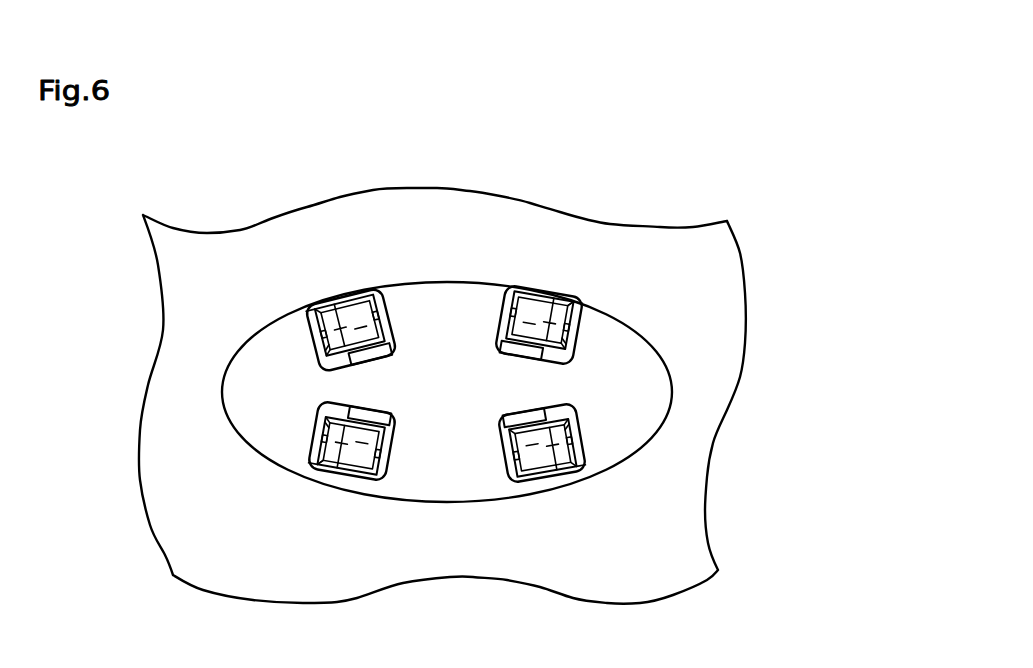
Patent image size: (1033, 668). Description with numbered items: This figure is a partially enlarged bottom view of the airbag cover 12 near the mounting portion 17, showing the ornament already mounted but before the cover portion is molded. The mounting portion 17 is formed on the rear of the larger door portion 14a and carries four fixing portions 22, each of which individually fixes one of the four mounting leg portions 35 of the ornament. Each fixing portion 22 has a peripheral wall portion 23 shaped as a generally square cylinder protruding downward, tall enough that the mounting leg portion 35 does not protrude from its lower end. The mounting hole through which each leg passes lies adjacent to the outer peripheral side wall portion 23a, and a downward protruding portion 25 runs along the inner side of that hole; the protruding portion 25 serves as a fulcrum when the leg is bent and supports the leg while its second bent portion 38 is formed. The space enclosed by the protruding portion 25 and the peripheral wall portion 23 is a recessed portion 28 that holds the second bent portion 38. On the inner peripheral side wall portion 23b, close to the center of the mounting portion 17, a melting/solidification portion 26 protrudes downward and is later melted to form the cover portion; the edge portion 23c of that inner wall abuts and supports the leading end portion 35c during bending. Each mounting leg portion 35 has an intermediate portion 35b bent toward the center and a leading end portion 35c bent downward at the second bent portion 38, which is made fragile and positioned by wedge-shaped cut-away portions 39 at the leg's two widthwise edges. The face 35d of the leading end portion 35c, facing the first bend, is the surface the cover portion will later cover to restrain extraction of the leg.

The airbag cover 12 is at (464, 356).
The larger door portion 14a is at (693, 242).
The mounting portion 17 is at (255, 463).
The fixing portion 22 is at (389, 293).
The peripheral wall portion 23 is at (316, 294).
The outer peripheral side wall portion 23a is at (346, 300).
The inner peripheral side wall portion 23b is at (340, 366).
The edge portion 23c is at (560, 300).
The protruding portion 25 is at (305, 312).
The melting/solidification portion 26 is at (363, 368).
The recessed portion 28 is at (385, 332).
The mounting leg portion 35 is at (495, 472).
The intermediate portion 35b is at (476, 300).
The leading end portion 35c is at (581, 370).
The face 35d is at (325, 357).
The second bent portion 38 is at (350, 298).
The cut-away portion 39 is at (320, 325).